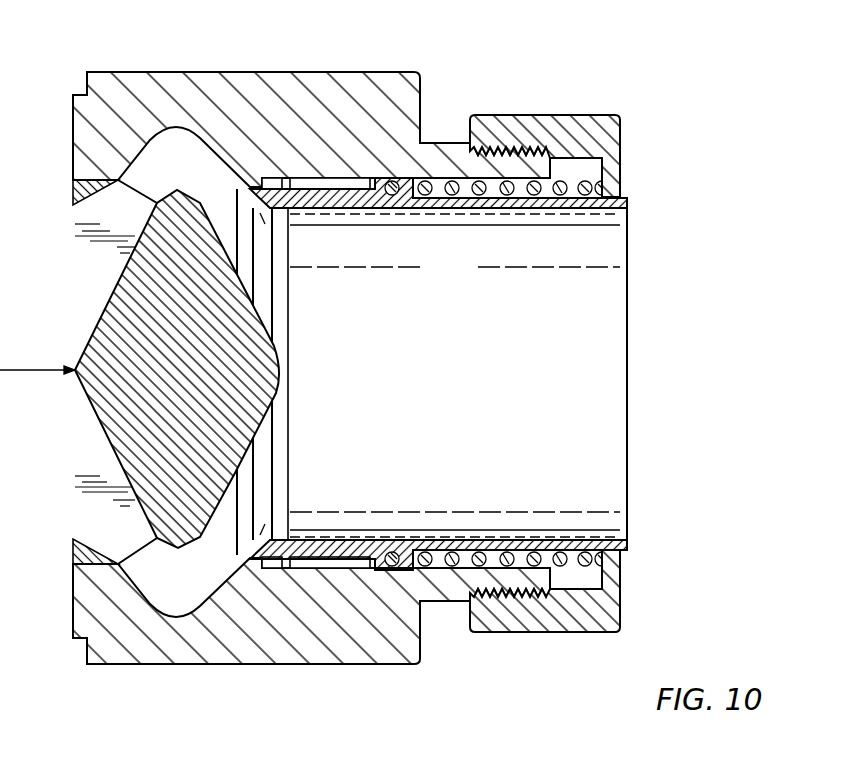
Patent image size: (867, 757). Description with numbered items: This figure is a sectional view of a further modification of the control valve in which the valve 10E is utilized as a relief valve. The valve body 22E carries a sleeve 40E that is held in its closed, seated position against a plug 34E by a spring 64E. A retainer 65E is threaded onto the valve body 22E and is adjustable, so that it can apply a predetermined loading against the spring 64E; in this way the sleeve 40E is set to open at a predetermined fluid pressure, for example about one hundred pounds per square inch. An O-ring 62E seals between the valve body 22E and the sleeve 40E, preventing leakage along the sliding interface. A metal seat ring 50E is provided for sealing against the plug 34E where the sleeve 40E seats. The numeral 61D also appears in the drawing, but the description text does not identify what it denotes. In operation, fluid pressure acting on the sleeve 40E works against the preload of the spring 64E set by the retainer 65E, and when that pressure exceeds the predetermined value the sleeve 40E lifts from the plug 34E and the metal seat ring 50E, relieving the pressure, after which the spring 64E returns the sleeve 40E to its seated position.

The valve 10E is at (397, 72).
The valve body 22E is at (263, 97).
The plug 34E is at (253, 390).
The sleeve 40E is at (455, 206).
The metal seat ring 50E is at (276, 204).
The retainer ring 61D is at (316, 284).
The O-ring 62E is at (392, 197).
The spring 64E is at (540, 197).
The retainer 65E is at (590, 130).